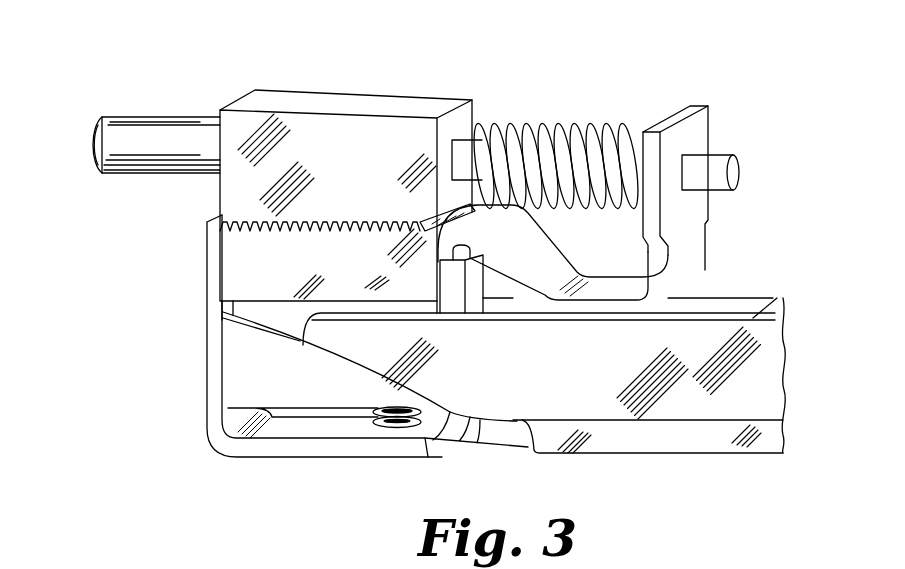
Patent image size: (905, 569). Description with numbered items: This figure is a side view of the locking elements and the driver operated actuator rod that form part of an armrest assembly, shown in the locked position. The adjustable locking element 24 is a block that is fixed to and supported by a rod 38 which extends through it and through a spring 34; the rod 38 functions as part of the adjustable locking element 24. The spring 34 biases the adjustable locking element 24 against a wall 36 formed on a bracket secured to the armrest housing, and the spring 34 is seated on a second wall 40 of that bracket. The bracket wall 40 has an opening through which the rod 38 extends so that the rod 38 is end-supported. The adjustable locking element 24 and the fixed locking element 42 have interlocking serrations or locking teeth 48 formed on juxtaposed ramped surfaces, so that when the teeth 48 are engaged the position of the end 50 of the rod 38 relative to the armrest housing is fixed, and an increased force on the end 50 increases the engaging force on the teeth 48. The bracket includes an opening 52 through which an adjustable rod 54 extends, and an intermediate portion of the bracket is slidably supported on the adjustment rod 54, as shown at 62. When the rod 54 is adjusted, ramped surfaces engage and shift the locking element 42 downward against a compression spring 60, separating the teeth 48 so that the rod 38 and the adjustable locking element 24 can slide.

The adjustable locking element 24 is at (350, 102).
The spring 34 is at (562, 122).
The wall 36 is at (213, 278).
The rod 38 is at (173, 117).
The second wall 40 is at (703, 123).
The fixed locking element 42 is at (243, 363).
The locking teeth 48 is at (257, 233).
The end 50 is at (88, 143).
The opening 52 is at (457, 320).
The adjustable rod 54 is at (773, 368).
The compression spring 60 is at (393, 423).
The intermediate portion of the bracket 62 is at (590, 320).